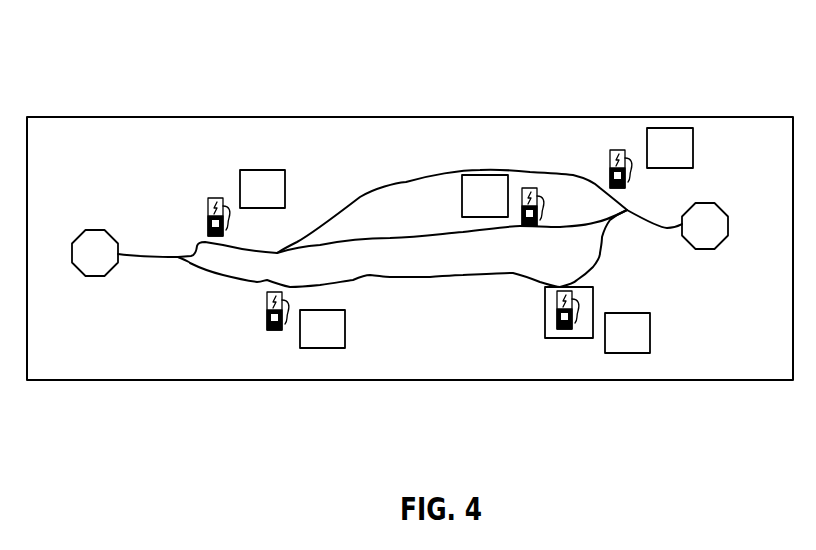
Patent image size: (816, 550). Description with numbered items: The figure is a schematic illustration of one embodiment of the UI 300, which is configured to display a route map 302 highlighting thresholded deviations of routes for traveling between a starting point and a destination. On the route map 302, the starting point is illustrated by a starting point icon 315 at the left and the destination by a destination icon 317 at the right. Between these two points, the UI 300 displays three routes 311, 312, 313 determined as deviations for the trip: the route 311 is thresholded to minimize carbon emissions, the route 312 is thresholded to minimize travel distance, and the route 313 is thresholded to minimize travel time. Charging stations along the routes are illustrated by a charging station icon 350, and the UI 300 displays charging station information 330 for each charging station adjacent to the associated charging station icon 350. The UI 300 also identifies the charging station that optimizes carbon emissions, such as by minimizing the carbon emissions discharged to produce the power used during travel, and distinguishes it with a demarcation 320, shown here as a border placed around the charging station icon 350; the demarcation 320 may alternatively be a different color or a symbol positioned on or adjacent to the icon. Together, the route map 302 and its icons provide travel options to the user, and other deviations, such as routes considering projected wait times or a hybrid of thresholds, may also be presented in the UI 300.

The UI 300 is at (605, 68).
The route map 302 is at (707, 372).
The route 311 is at (462, 277).
The route 312 is at (390, 240).
The route 313 is at (406, 182).
The starting point icon 315 is at (105, 263).
The destination icon 317 is at (700, 246).
The demarcation 320 is at (545, 318).
The charging station information 330 is at (278, 187).
The charging station icon 350 is at (209, 199).